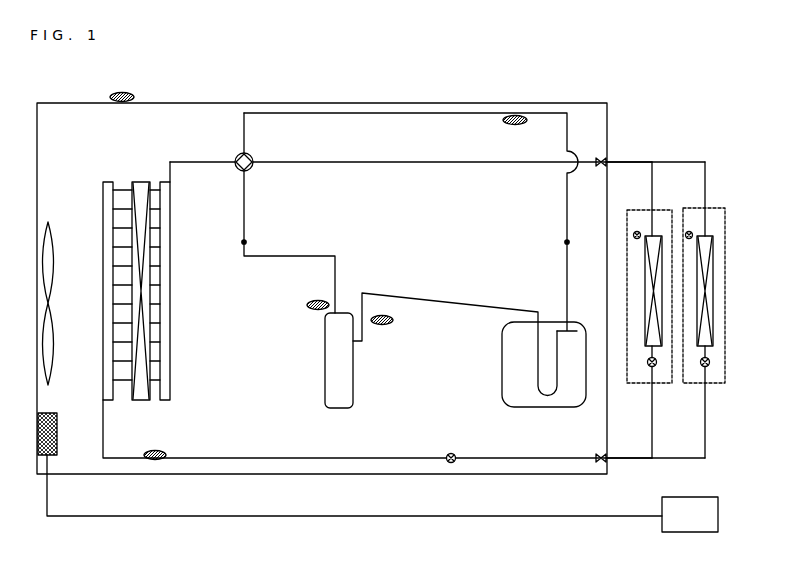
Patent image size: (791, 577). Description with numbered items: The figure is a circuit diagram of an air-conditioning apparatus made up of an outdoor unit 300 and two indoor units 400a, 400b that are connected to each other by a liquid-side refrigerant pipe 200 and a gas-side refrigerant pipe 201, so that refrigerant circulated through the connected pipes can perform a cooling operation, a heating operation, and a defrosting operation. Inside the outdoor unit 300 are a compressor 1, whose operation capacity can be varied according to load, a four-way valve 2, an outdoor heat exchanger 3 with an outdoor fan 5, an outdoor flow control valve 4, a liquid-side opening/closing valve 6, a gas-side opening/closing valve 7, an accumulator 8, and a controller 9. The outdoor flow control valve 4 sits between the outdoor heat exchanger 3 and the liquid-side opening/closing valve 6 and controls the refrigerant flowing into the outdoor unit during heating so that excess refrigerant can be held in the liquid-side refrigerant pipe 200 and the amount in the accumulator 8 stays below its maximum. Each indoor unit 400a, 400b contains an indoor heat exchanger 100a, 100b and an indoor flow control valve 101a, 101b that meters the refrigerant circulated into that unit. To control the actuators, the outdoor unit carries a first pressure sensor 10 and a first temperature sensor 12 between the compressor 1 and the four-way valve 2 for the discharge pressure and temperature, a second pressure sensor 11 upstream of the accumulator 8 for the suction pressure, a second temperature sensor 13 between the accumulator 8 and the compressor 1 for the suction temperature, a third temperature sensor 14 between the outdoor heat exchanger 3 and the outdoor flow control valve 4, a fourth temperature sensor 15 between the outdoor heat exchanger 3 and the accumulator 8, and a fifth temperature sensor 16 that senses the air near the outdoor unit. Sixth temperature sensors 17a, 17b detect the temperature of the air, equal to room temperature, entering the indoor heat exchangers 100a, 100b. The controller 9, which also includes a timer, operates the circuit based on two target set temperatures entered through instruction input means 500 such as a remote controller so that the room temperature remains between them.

The compressor 1 is at (328, 398).
The four-way valve 2 is at (252, 157).
The outdoor heat exchanger 3 is at (170, 398).
The outdoor flow control valve 4 is at (455, 454).
The outdoor fan 5 is at (62, 215).
The liquid-side opening/closing valve 6 is at (598, 456).
The gas-side opening/closing valve 7 is at (598, 160).
The accumulator 8 is at (502, 388).
The controller 9 is at (58, 416).
The first pressure sensor 10 is at (246, 242).
The second pressure sensor 11 is at (569, 242).
The first temperature sensor 12 is at (312, 311).
The second temperature sensor 13 is at (393, 318).
The third temperature sensor 14 is at (166, 452).
The fourth temperature sensor 15 is at (505, 124).
The fifth temperature sensor 16 is at (134, 93).
The sixth temperature sensor 17a is at (636, 231).
The sixth temperature sensor 17b is at (688, 231).
The indoor heat exchanger 100a is at (655, 234).
The indoor heat exchanger 100b is at (709, 234).
The indoor flow control valve 101a is at (656, 366).
The indoor flow control valve 101b is at (708, 366).
The liquid-side refrigerant pipe 200 is at (628, 466).
The gas-side refrigerant pipe 201 is at (645, 160).
The outdoor unit 300 is at (418, 474).
The indoor unit 400a is at (643, 384).
The indoor unit 400b is at (700, 384).
The instruction input means 500 is at (688, 533).